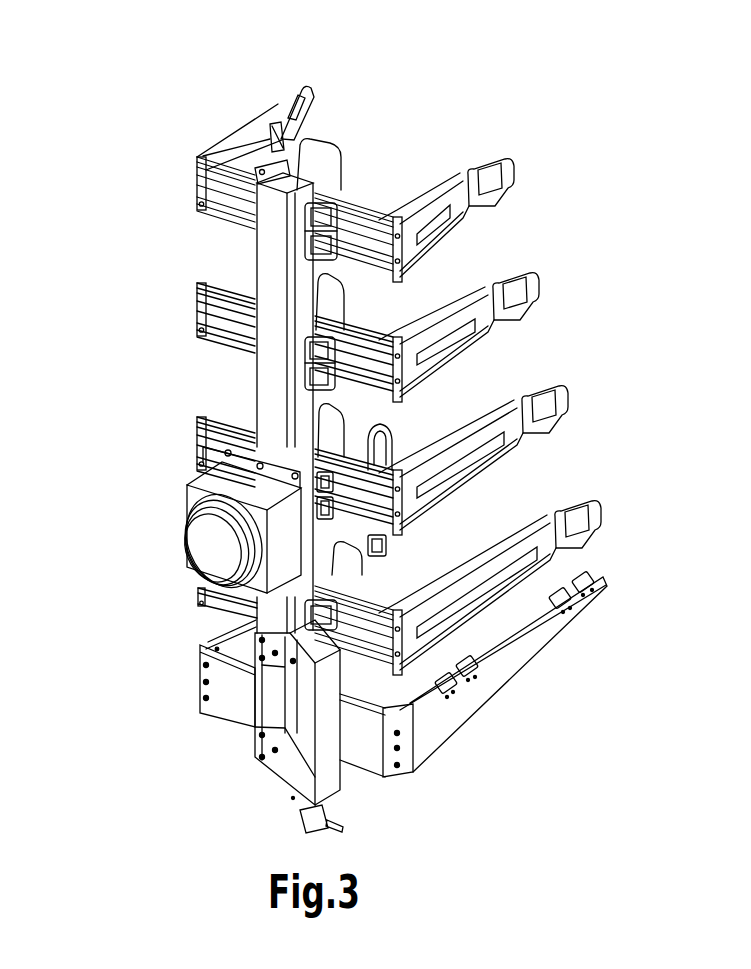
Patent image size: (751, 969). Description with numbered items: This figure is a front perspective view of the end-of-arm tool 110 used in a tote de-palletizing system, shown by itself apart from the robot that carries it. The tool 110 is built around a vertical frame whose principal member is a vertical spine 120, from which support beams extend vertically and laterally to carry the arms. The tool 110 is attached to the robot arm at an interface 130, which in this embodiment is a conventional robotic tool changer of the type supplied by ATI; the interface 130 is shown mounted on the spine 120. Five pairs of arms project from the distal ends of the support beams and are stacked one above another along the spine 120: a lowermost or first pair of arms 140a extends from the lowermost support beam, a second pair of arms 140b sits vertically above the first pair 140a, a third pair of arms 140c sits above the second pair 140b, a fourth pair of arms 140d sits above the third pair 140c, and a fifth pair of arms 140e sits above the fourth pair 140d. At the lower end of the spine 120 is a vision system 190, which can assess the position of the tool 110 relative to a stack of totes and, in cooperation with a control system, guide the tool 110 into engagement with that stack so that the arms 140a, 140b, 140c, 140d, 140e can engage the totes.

The end-of-arm tool 110 is at (538, 791).
The vertical spine 120 is at (268, 371).
The interface 130 is at (188, 484).
The vision system 190 is at (333, 777).
The lowermost pair of arms 140a is at (643, 582).
The second pair of arms 140b is at (635, 510).
The third pair of arms 140c is at (625, 398).
The fourth pair of arms 140d is at (625, 288).
The fifth pair of arms 140e is at (625, 178).